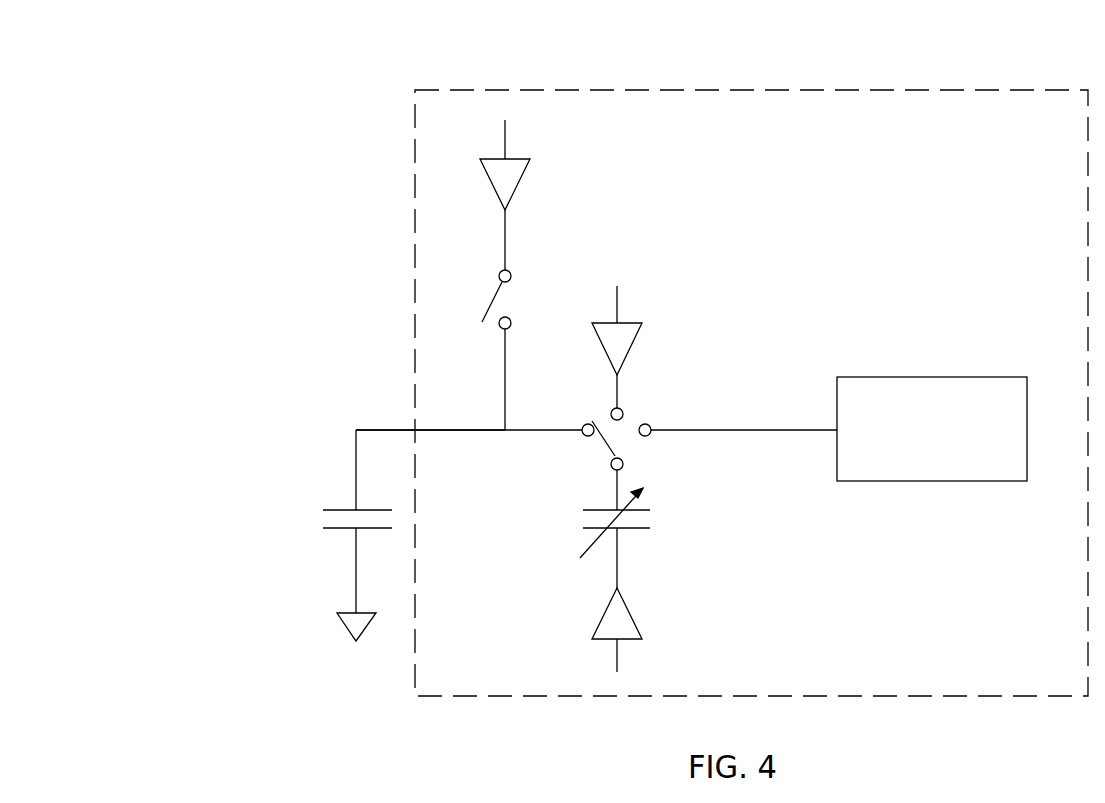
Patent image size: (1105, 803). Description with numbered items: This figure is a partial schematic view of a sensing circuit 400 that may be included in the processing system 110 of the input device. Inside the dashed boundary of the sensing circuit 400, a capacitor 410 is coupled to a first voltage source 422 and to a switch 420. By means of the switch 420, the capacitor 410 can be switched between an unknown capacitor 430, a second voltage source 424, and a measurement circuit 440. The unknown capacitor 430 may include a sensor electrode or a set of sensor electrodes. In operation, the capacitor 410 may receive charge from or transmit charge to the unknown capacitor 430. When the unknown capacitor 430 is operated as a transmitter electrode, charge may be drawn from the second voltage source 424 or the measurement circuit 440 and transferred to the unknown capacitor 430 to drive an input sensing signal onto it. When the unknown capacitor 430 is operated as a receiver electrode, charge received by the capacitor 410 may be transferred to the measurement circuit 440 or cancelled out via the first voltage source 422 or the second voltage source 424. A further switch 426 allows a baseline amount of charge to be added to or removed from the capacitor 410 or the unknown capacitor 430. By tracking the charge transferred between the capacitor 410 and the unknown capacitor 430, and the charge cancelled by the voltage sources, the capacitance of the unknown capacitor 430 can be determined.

The sensing circuit 400 is at (800, 90).
The processing system 110 is at (343, 177).
The switch 426 is at (477, 297).
The second voltage source 424 is at (633, 348).
The switch 420 is at (652, 400).
The capacitor 410 is at (660, 523).
The first voltage source 422 is at (633, 620).
The unknown capacitor 430 is at (310, 540).
The measurement circuit 440 is at (928, 377).